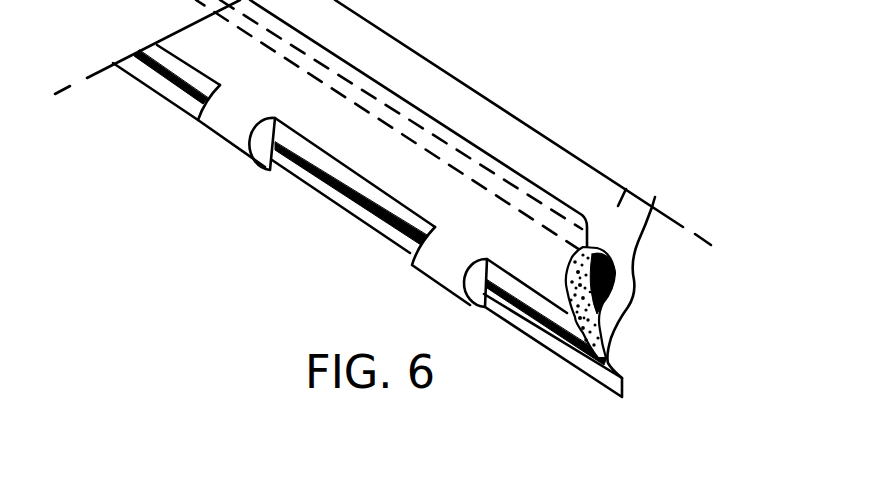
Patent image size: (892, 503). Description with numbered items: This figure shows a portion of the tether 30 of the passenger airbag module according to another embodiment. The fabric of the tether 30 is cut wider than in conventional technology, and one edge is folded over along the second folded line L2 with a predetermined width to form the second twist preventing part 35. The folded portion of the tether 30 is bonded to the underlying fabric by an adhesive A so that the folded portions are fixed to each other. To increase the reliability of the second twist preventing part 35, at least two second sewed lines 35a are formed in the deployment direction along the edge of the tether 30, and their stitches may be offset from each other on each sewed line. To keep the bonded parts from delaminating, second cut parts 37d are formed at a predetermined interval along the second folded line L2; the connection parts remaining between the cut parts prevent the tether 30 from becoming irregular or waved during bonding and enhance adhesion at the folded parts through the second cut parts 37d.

The tether 30 is at (624, 188).
The second twist preventing part 35 is at (560, 176).
The second sewed lines 35a is at (456, 152).
The second cut parts 37d is at (366, 224).
The second folded line L2 is at (292, 176).
The adhesive A is at (623, 267).